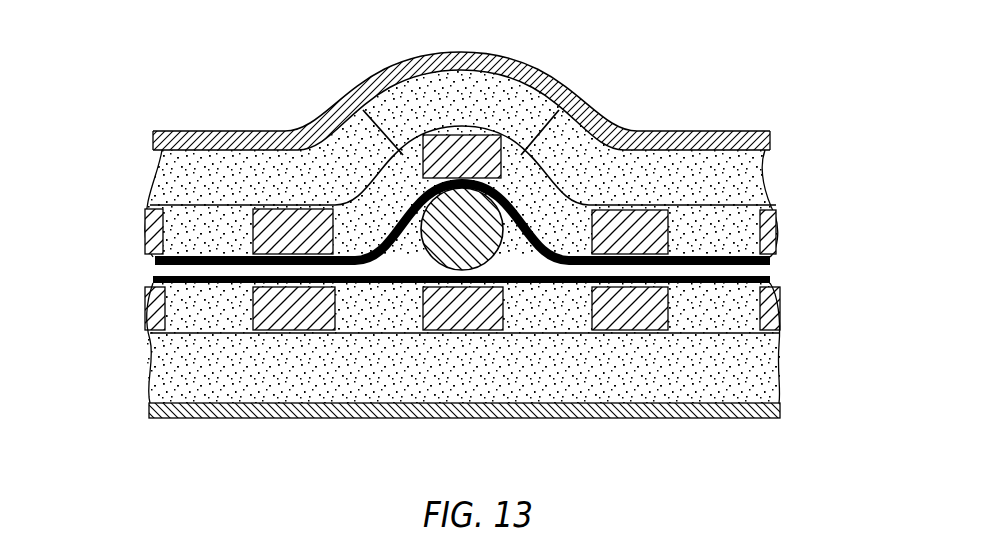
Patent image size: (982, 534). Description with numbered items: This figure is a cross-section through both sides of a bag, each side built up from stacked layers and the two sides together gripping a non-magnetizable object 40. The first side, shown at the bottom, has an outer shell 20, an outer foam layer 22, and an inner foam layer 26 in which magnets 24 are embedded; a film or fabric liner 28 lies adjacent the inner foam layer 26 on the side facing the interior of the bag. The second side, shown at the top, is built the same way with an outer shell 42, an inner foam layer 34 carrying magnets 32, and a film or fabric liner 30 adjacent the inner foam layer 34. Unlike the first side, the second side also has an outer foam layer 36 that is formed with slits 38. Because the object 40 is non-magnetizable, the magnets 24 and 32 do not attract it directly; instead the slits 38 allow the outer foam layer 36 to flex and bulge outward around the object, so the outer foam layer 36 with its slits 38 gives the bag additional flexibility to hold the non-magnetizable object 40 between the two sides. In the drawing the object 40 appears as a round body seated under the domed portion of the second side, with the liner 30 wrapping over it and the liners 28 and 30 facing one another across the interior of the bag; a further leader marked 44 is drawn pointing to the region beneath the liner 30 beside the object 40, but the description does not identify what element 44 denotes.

The outer shell 20 is at (728, 418).
The outer foam layer 22 is at (562, 418).
The magnets 24 is at (287, 313).
The inner foam layer 26 is at (192, 318).
The film or fabric liner 28 is at (153, 278).
The film or fabric liner 30 is at (153, 262).
The magnets 32 is at (265, 233).
The inner foam layer 34 is at (152, 212).
The outer foam layer 36 is at (362, 93).
The slits 38 is at (558, 108).
The non-magnetizable object 40 is at (470, 220).
The outer shell 42 is at (162, 132).
The gap 44 is at (415, 255).